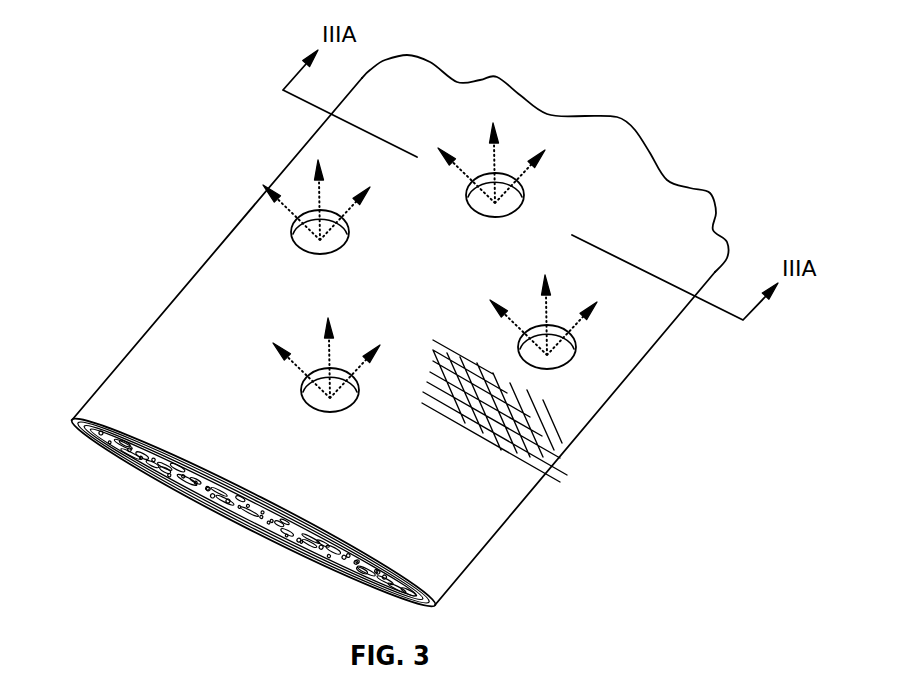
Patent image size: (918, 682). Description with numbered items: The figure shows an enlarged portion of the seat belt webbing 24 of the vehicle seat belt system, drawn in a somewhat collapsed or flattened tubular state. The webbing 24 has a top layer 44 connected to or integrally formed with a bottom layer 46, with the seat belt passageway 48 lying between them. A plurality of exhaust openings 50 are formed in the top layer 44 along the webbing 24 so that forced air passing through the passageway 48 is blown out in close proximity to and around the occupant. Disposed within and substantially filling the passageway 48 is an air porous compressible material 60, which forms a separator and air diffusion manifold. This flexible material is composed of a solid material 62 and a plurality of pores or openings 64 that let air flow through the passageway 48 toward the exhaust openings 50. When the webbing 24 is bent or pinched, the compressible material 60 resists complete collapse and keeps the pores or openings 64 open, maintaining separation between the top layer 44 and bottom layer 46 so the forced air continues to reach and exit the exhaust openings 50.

The seat belt webbing 24 is at (167, 365).
The top layer 44 is at (153, 437).
The bottom layer 46 is at (185, 500).
The seat belt passageway 48 is at (250, 518).
The exhaust openings 50 is at (307, 243).
The air porous compressible material 60 is at (307, 538).
The solid material 62 is at (172, 467).
The pores or openings 64 is at (222, 503).